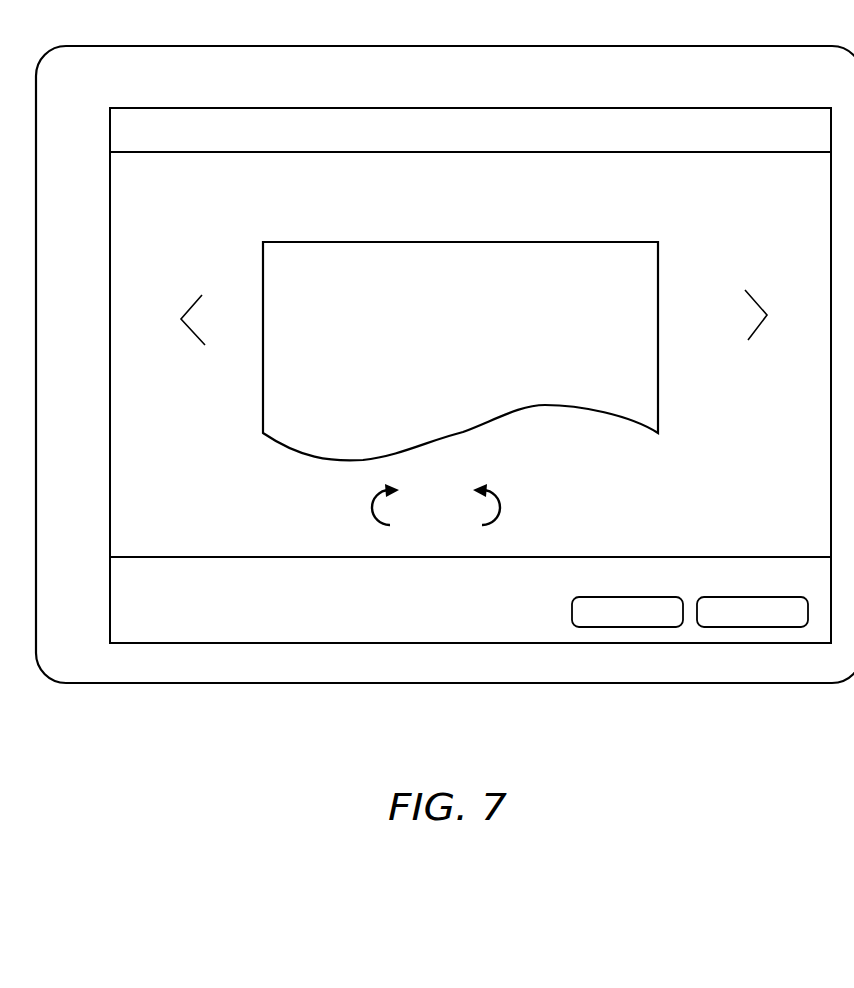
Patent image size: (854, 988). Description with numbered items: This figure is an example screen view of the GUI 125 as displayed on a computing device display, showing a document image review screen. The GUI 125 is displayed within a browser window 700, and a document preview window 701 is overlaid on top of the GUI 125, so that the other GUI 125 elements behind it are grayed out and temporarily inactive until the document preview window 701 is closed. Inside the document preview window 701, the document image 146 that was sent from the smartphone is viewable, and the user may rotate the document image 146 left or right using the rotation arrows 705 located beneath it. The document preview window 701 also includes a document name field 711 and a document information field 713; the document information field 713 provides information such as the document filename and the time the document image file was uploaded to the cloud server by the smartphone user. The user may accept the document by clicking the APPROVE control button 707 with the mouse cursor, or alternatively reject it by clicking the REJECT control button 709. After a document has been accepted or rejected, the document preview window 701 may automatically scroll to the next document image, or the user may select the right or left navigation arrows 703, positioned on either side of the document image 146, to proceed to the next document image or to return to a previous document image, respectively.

The browser window 700 is at (612, 45).
The GUI 125 is at (827, 86).
The document preview window 701 is at (427, 105).
The document image 146 is at (588, 258).
The navigation arrows 703 is at (193, 305).
The rotation arrows 705 is at (506, 491).
The document name field 711 is at (192, 570).
The document information field 713 is at (201, 630).
The APPROVE control button 707 is at (590, 618).
The REJECT control button 709 is at (722, 618).